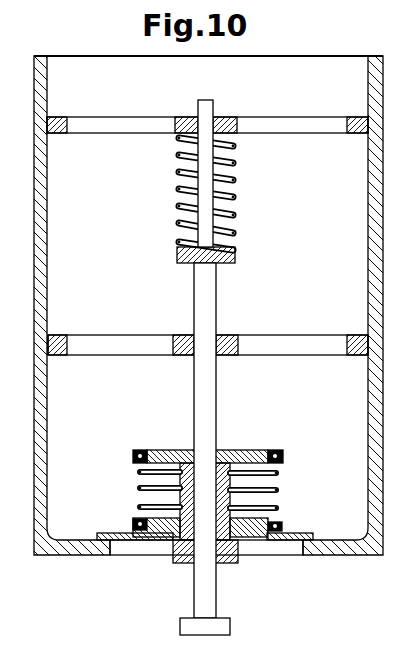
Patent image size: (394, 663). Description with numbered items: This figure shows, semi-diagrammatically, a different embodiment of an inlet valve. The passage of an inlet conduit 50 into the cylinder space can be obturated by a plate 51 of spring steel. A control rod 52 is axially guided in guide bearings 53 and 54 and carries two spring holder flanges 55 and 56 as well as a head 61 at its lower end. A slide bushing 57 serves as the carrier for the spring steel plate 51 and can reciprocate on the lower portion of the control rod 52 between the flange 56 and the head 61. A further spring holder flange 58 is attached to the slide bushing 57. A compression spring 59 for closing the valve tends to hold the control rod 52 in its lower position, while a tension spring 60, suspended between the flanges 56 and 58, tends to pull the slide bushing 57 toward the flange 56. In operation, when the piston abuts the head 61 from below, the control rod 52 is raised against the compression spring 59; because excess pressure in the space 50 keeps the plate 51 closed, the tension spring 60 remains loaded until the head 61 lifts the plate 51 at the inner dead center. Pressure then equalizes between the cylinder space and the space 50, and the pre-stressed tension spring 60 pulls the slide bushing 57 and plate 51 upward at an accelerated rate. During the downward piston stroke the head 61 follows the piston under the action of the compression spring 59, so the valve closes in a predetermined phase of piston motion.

The inlet conduit 50 is at (70, 397).
The plate of spring steel 51 is at (296, 537).
The control rod 52 is at (205, 296).
The guide bearing 53 is at (190, 117).
The guide bearing 54 is at (230, 336).
The spring holder flange 55 is at (237, 258).
The spring holder flange 56 is at (237, 451).
The slide bushing 57 is at (173, 557).
The spring holder flange 58 is at (270, 526).
The compression spring 59 is at (238, 180).
The tension spring 60 is at (140, 490).
The head 61 is at (215, 626).